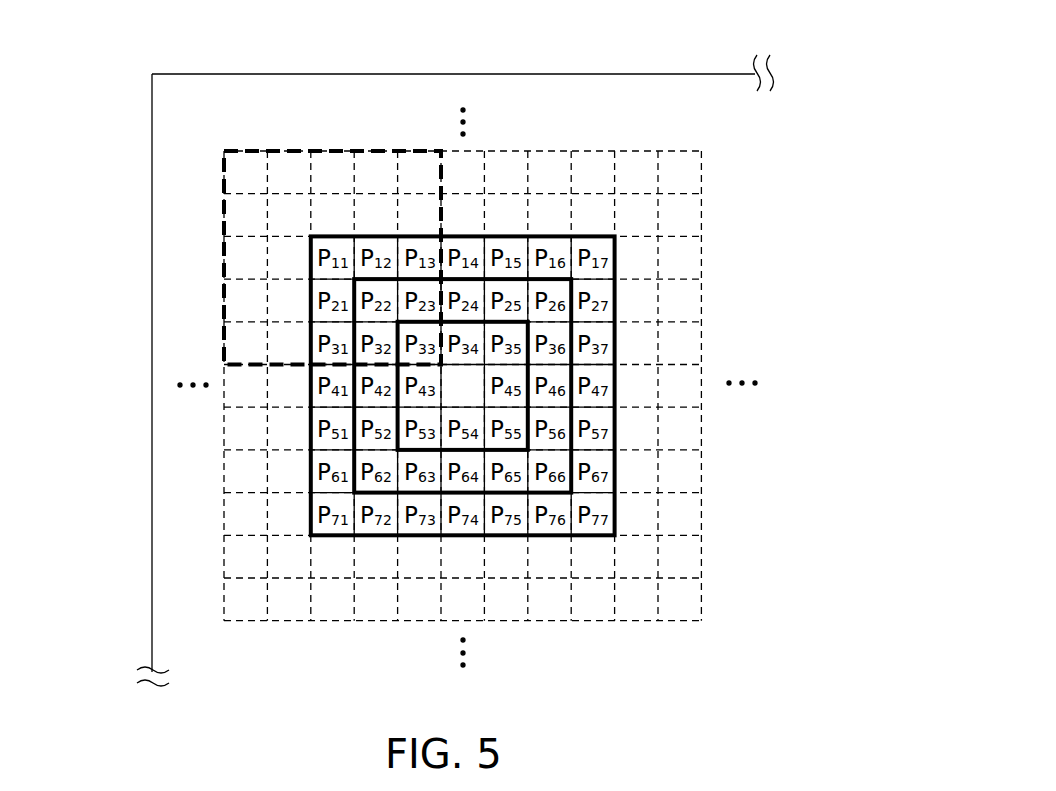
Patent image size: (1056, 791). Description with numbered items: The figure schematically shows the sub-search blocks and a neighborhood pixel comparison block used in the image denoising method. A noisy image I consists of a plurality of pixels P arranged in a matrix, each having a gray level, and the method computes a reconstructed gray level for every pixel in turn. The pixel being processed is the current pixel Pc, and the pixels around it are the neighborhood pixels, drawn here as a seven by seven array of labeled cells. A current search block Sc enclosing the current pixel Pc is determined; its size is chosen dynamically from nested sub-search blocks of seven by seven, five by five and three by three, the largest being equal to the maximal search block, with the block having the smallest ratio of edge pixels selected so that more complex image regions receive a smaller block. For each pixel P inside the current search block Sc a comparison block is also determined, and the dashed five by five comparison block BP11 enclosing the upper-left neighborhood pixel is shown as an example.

The noisy image I is at (152, 183).
The pixels P is at (677, 168).
The current pixel Pc is at (459, 386).
The current search block Sc is at (615, 294).
The comparison block BP11 is at (248, 150).